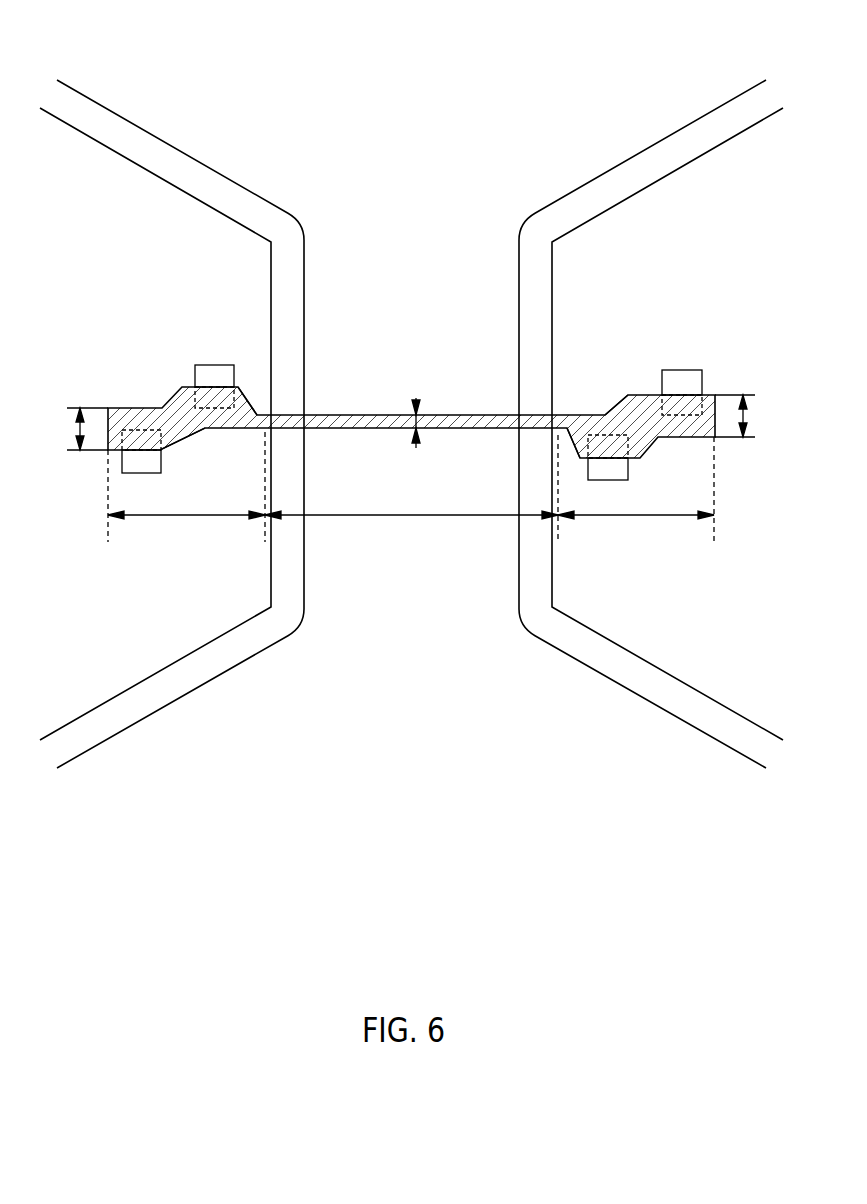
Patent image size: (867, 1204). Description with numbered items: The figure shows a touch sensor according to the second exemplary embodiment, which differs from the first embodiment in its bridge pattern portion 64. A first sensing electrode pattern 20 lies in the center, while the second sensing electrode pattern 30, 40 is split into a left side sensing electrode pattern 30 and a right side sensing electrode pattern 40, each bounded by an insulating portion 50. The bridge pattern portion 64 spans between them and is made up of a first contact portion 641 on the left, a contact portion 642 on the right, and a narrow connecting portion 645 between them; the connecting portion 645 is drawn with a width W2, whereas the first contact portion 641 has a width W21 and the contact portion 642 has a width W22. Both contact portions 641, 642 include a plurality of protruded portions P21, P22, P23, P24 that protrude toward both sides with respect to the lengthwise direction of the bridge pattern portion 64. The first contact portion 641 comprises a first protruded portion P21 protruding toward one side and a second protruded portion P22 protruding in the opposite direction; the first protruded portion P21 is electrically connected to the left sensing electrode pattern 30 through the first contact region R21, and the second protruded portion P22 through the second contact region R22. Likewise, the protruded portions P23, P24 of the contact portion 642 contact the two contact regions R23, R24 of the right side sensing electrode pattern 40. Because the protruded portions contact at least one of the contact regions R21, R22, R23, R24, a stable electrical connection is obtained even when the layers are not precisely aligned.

The first sensing electrode pattern 20 is at (423, 192).
The second sensing electrode pattern 30 is at (88, 170).
The second sensing electrode pattern 40 is at (698, 183).
The insulating portion 50 is at (151, 153).
The bridge pattern portion 64 is at (112, 380).
The first contact region R21 is at (212, 373).
The second contact region R22 is at (130, 462).
The contact region R23 is at (615, 473).
The contact region R24 is at (685, 378).
The first protruded portion P21 is at (243, 403).
The second protruded portion P22 is at (187, 440).
The protruded portion P23 is at (580, 422).
The protruded portion P24 is at (645, 403).
The width of connection line W2 is at (413, 422).
The width of first pad W21 is at (68, 429).
The width of second pad W22 is at (756, 416).
The first contact portion 641 is at (186, 490).
The contact portion 642 is at (636, 491).
The connecting portion 645 is at (411, 529).